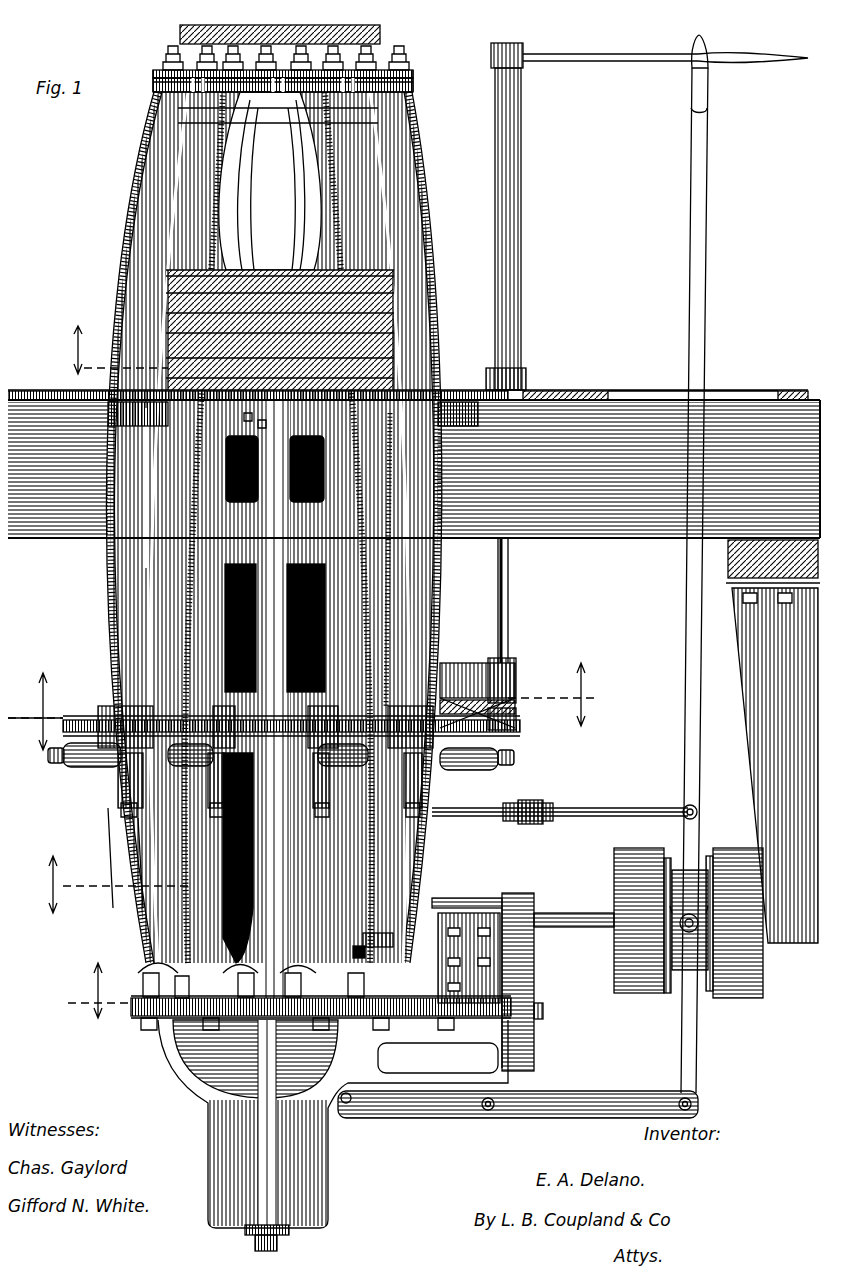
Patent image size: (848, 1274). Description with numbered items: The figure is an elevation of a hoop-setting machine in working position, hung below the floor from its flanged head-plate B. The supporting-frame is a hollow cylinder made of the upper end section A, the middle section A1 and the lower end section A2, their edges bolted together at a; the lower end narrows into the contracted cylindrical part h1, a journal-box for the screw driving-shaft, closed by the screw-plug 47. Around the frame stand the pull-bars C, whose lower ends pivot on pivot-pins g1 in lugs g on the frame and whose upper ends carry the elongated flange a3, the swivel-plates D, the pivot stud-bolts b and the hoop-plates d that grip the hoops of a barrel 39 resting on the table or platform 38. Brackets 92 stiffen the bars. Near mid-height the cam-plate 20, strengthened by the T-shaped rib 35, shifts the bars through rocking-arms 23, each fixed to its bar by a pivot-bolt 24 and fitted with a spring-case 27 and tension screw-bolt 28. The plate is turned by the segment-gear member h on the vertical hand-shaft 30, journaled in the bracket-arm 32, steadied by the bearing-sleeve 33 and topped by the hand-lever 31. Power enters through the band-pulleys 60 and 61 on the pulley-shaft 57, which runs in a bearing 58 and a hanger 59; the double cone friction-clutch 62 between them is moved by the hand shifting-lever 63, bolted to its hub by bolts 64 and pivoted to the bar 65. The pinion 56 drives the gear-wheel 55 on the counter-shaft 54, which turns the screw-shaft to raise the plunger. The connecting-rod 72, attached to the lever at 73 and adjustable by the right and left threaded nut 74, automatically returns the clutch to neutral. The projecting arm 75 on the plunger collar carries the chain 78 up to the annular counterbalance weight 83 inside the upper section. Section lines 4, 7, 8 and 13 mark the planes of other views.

The pull-bars C is at (320, 160).
The barrel 39 is at (278, 181).
The table or platform 38 is at (175, 365).
The pivot stud-bolts b is at (165, 40).
The elongated flange a3 is at (420, 100).
The hoop-plates d is at (145, 66).
The swivel-plates D is at (405, 78).
The bearing-sleeve 33 is at (513, 236).
The vertical hand-shaft 30 is at (515, 60).
The hand-lever 31 is at (750, 56).
The hand shifting-lever 63 is at (690, 146).
The section line 4 is at (106, 350).
The upper end section A is at (430, 466).
The flanged head-plate B is at (452, 360).
The brackets 92 is at (450, 418).
The annular counterbalance weight 83 is at (275, 552).
The chain 78 is at (378, 652).
The bracket-arm 32 is at (500, 658).
The segment-gear member h is at (507, 706).
The T-shaped rib 35 is at (508, 718).
The section line 7 is at (310, 706).
The cam-plate 20 is at (70, 712).
The rocking-arms 23 is at (138, 704).
The spring-case 27 is at (70, 740).
The screw-bolt 28 is at (48, 752).
The pivot-bolt 24 is at (115, 805).
The middle section A1 is at (254, 858).
The section line 8 is at (107, 884).
The connecting-rod 72 is at (458, 810).
The right and left threaded nut 74 is at (525, 816).
The attachment point 73 is at (676, 800).
The hanger 59 is at (773, 741).
The bearing 58 is at (446, 896).
The pinion 56 is at (510, 890).
The gear-wheel 55 is at (526, 976).
The horizontal counter-shaft 54 is at (535, 1004).
The pulley-shaft 57 is at (566, 910).
The band-pulley 60 is at (642, 920).
The double cone friction-clutch 62 is at (700, 812).
The bolts 64 is at (700, 918).
The band-pulley 61 is at (734, 923).
The pivot-pins g1 is at (138, 955).
The lugs g is at (135, 976).
The section line 13 is at (100, 990).
The bolts a is at (133, 1016).
The projecting arm 75 is at (386, 946).
The lower end section A2 is at (162, 1064).
The contracted cylindrical part h1 is at (270, 1178).
The screw-plug 47 is at (247, 1234).
The bar 65 is at (640, 1088).